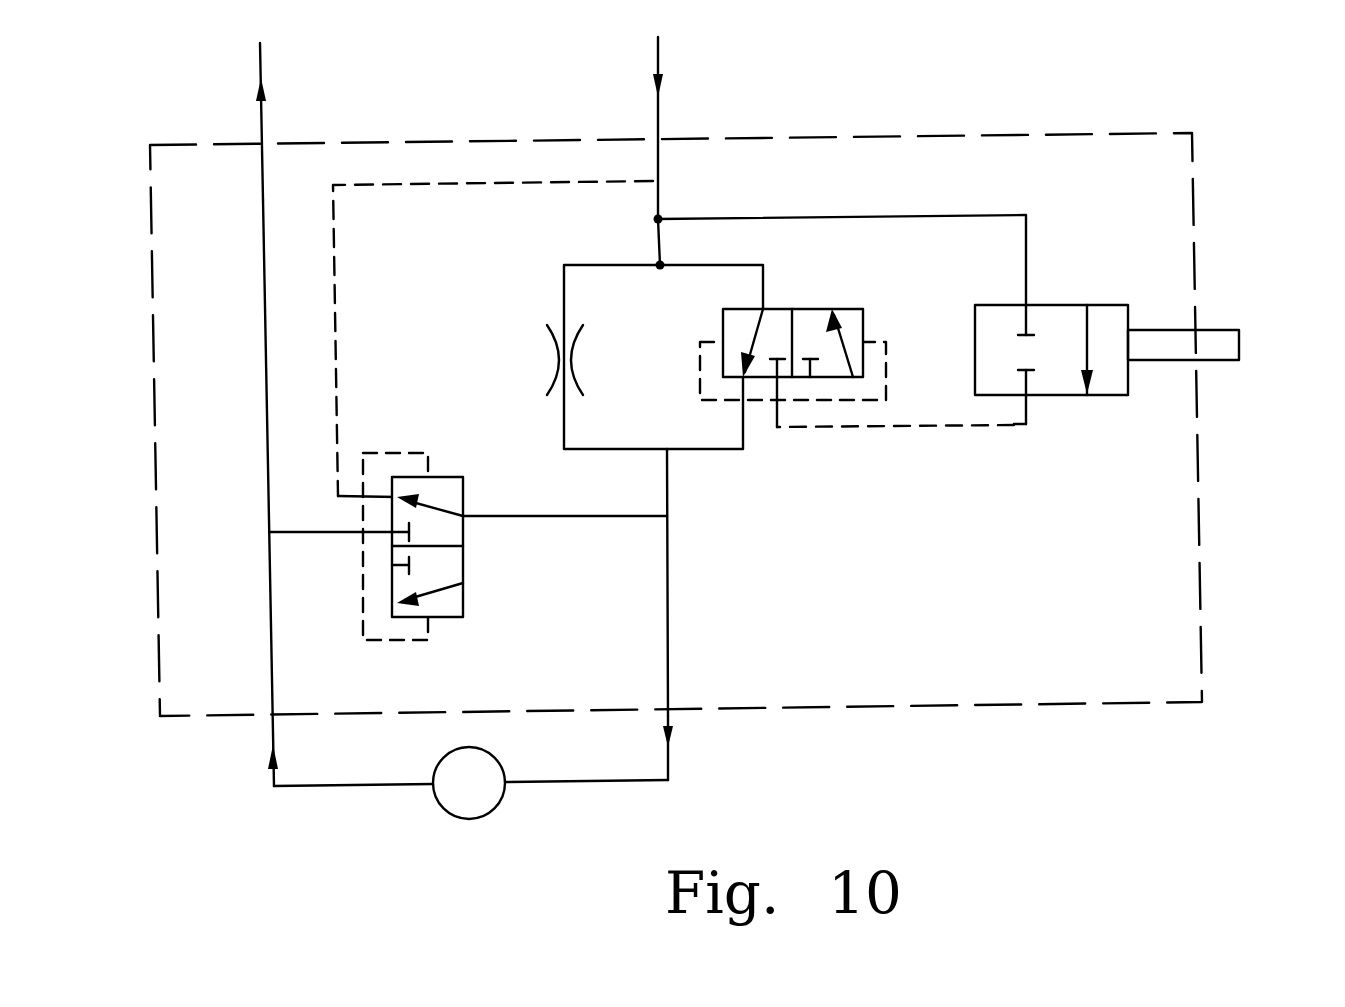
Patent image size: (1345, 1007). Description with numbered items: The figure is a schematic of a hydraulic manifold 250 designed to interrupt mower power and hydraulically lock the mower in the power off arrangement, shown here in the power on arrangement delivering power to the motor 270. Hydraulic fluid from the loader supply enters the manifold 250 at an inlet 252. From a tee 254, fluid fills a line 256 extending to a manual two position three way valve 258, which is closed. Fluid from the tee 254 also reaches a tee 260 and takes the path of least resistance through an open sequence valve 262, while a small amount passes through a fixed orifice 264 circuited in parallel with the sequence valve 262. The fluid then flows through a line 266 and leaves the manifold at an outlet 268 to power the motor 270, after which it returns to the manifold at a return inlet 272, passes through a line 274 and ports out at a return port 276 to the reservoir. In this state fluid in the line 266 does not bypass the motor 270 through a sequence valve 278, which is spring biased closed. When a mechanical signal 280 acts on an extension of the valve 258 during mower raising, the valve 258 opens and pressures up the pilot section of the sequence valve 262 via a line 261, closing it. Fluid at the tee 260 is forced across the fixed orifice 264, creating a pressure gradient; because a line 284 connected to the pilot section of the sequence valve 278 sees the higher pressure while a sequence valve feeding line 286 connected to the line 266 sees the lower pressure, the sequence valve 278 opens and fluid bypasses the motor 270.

The manifold 250 is at (1015, 716).
The manifold inlet 252 is at (662, 85).
The tee 254 is at (662, 216).
The line 256 is at (918, 214).
The manual two position three way valve 258 is at (1058, 305).
The tee 260 is at (660, 270).
The line 261 is at (903, 429).
The sequence valve 262 is at (822, 309).
The fixed orifice 264 is at (558, 358).
The line 266 is at (669, 622).
The manifold outlet 268 is at (672, 742).
The motor 270 is at (469, 783).
The manifold return inlet 272 is at (270, 749).
The line 274 is at (266, 411).
The manifold return port 276 is at (265, 89).
The sequence valve 278 is at (464, 598).
The mechanical signal 280 is at (1246, 374).
The line 284 is at (336, 264).
The sequence valve feeding line 286 is at (615, 517).